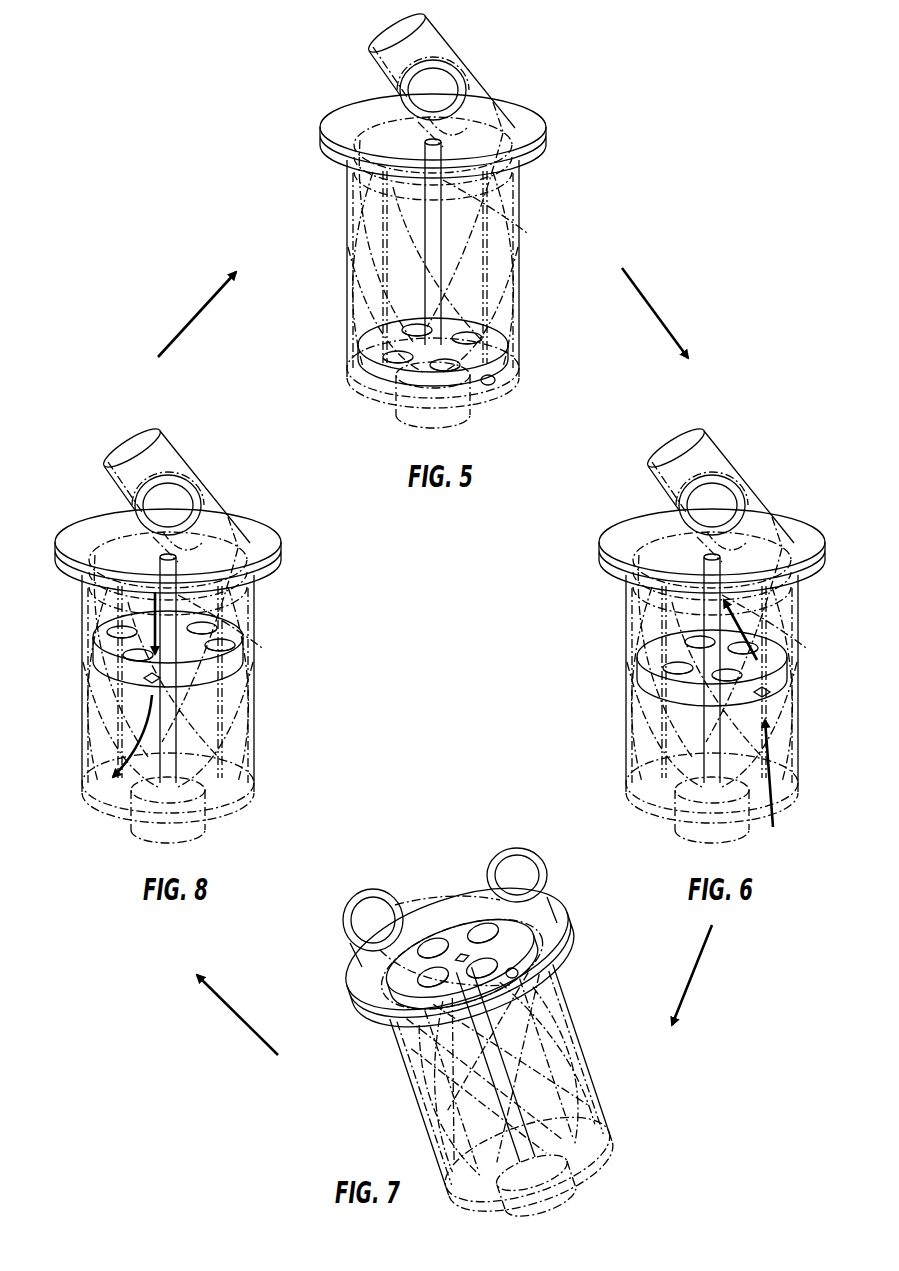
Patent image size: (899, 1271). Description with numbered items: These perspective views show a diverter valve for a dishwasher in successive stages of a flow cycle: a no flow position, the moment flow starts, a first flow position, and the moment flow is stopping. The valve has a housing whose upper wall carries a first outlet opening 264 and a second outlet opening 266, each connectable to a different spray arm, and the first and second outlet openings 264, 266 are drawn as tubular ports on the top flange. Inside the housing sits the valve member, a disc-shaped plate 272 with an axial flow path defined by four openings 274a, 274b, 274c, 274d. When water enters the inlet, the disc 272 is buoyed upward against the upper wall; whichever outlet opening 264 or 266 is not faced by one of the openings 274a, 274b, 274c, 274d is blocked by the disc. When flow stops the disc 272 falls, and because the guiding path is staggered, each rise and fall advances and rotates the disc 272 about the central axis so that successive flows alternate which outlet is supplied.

In FIG. 5, the first outlet opening 264 is at (462, 83).
In FIG. 8, the first outlet opening 264 is at (207, 510).
In FIG. 6, the first outlet opening 264 is at (757, 510).
In FIG. 7, the first outlet opening 264 is at (545, 872).
In FIG. 5, the second outlet opening 266 is at (388, 33).
In FIG. 8, the second outlet opening 266 is at (130, 443).
In FIG. 6, the second outlet opening 266 is at (677, 440).
In FIG. 7, the second outlet opening 266 is at (370, 893).
In FIG. 5, the disc-shaped plate 272 is at (512, 372).
In FIG. 8, the disc-shaped plate 272 is at (237, 653).
In FIG. 6, the disc-shaped plate 272 is at (790, 677).
In FIG. 7, the disc-shaped plate 272 is at (534, 945).
In FIG. 5, the opening 274a is at (478, 340).
In FIG. 8, the opening 274a is at (240, 655).
In FIG. 6, the opening 274a is at (757, 650).
In FIG. 7, the opening 274a is at (485, 926).
In FIG. 5, the opening 274b is at (412, 333).
In FIG. 8, the opening 274b is at (207, 630).
In FIG. 6, the opening 274b is at (698, 640).
In FIG. 7, the opening 274b is at (438, 940).
In FIG. 5, the opening 274c is at (440, 372).
In FIG. 8, the opening 274c is at (143, 678).
In FIG. 6, the opening 274c is at (770, 697).
In FIG. 7, the opening 274c is at (490, 974).
In FIG. 5, the opening 274d is at (398, 356).
In FIG. 8, the opening 274d is at (120, 630).
In FIG. 6, the opening 274d is at (662, 668).
In FIG. 7, the opening 274d is at (427, 978).